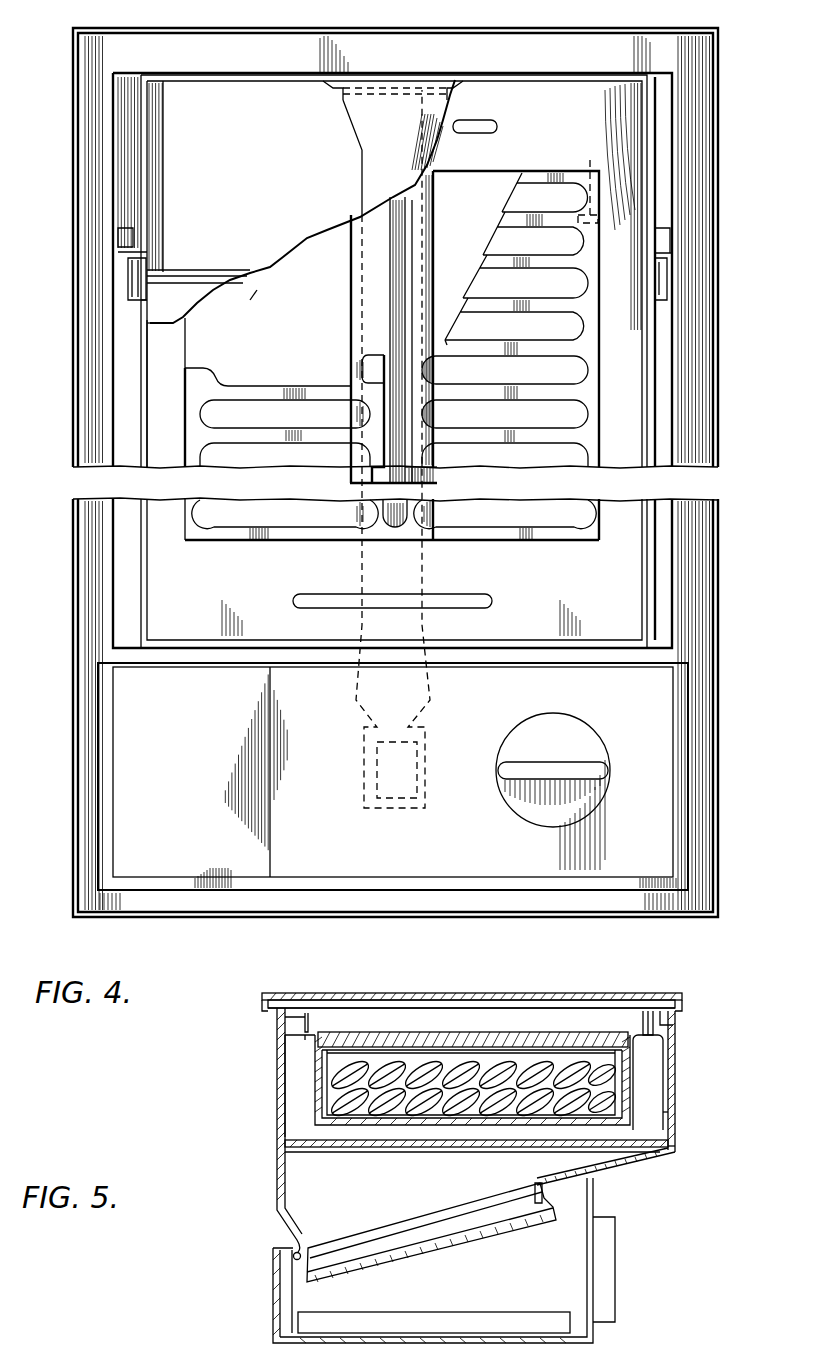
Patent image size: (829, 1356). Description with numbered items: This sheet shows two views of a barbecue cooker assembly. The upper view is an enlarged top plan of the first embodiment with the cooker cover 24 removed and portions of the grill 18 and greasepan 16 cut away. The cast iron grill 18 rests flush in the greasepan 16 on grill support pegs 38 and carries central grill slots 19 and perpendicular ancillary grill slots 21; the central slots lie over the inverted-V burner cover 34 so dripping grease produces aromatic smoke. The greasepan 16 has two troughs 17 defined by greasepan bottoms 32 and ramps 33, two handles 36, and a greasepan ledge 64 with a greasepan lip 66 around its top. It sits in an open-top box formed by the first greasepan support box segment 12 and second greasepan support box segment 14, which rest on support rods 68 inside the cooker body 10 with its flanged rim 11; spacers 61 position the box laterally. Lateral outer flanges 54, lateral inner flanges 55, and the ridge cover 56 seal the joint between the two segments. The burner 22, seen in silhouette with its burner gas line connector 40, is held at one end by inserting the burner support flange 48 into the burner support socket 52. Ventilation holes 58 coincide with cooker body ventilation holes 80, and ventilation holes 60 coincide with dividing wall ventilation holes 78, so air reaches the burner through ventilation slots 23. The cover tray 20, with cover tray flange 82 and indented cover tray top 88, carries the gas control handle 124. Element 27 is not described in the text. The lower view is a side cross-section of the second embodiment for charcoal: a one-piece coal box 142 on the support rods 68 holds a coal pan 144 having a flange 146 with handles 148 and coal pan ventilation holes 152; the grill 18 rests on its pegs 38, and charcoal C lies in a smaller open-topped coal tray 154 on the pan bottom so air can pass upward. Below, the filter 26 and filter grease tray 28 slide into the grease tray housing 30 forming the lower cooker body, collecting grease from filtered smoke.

In FIG. 5, the cooker body 10 is at (675, 1050).
In FIG. 4, the flanged rim 11 is at (698, 122).
In FIG. 5, the flanged rim 11 is at (680, 1003).
In FIG. 4, the first greasepan support box segment 12 is at (657, 348).
In FIG. 4, the second greasepan support box segment 14 is at (657, 207).
In FIG. 4, the greasepan 16 is at (642, 172).
In FIG. 4, the troughs 17 is at (328, 225).
In FIG. 4, the grill 18 is at (547, 171).
In FIG. 5, the grill 18 is at (317, 1053).
In FIG. 4, the central grill slots 19 is at (378, 378).
In FIG. 4, the cover tray 20 is at (635, 765).
In FIG. 4, the ancillary grill slots 21 is at (208, 423).
In FIG. 4, the burner 22 is at (362, 153).
In FIG. 4, the ventilation slots 23 is at (428, 268).
In FIG. 5, the cooker cover 24 is at (657, 993).
In FIG. 5, the filter 26 is at (510, 1222).
In FIG. 4, the tube 27 is at (465, 363).
In FIG. 5, the filter grease tray 28 is at (465, 1314).
In FIG. 5, the grease tray housing 30 is at (598, 1195).
In FIG. 4, the greasepan bottoms 32 is at (257, 290).
In FIG. 4, the ramps 33 is at (297, 267).
In FIG. 4, the burner cover 34 is at (351, 330).
In FIG. 4, the handles 36 is at (497, 127).
In FIG. 4, the grill support pegs 38 is at (592, 160).
In FIG. 5, the grill support pegs 38 is at (590, 1030).
In FIG. 4, the burner gas line connector 40 is at (375, 800).
In FIG. 4, the burner support flange 48 is at (343, 95).
In FIG. 4, the burner support socket 52 is at (445, 83).
In FIG. 4, the lateral outer flanges 54 is at (135, 272).
In FIG. 4, the lateral inner flanges 55 is at (143, 310).
In FIG. 4, the ridge cover 56 is at (200, 270).
In FIG. 5, the ventilation holes 58 is at (295, 1085).
In FIG. 5, the ventilation holes 60 is at (675, 1124).
In FIG. 4, the spacers 61 is at (128, 232).
In FIG. 4, the greasepan ledge 64 is at (153, 392).
In FIG. 4, the greasepan lip 66 is at (147, 355).
In FIG. 5, the support rods 68 is at (305, 1152).
In FIG. 5, the dividing wall ventilation holes 78 is at (672, 1104).
In FIG. 5, the cooker body ventilation holes 80 is at (283, 1100).
In FIG. 4, the cover tray flange 82 is at (125, 657).
In FIG. 4, the cover tray top 88 is at (125, 752).
In FIG. 4, the gas control handle 124 is at (590, 723).
In FIG. 5, the coal box 142 is at (585, 1137).
In FIG. 5, the coal pan 144 is at (640, 1085).
In FIG. 5, the flange 146 is at (640, 1030).
In FIG. 5, the handles 148 is at (305, 1018).
In FIG. 5, the coal pan ventilation holes 152 is at (317, 1112).
In FIG. 5, the coal tray 154 is at (334, 1060).
In FIG. 5, the charcoal C is at (380, 1118).